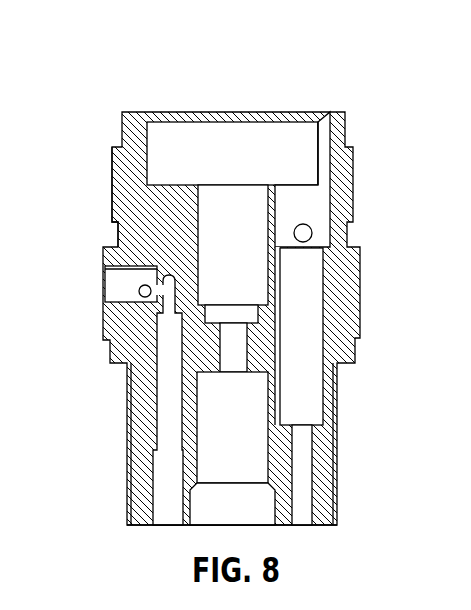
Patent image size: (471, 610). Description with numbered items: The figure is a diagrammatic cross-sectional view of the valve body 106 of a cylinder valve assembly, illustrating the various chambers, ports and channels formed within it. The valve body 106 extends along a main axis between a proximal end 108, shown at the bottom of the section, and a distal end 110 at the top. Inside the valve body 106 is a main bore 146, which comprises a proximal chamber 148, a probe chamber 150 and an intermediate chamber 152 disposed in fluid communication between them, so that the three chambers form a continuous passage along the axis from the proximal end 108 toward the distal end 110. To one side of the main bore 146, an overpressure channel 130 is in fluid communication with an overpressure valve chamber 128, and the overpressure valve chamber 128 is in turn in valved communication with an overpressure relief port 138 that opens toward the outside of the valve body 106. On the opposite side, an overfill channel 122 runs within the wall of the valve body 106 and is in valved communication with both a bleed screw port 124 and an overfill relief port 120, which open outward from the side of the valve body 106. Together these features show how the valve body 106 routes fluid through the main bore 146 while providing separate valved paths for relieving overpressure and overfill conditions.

The valve body 106 is at (137, 210).
The proximal end 108 is at (324, 526).
The distal end 110 is at (340, 112).
The overfill relief port 120 is at (139, 291).
The overfill channel 122 is at (168, 375).
The bleed screw port 124 is at (121, 283).
The overpressure valve chamber 128 is at (322, 326).
The overpressure channel 130 is at (302, 480).
The overpressure relief port 138 is at (299, 238).
The main bore 146 is at (234, 143).
The proximal chamber 148 is at (256, 440).
The probe chamber 150 is at (256, 245).
The intermediate chamber 152 is at (233, 352).